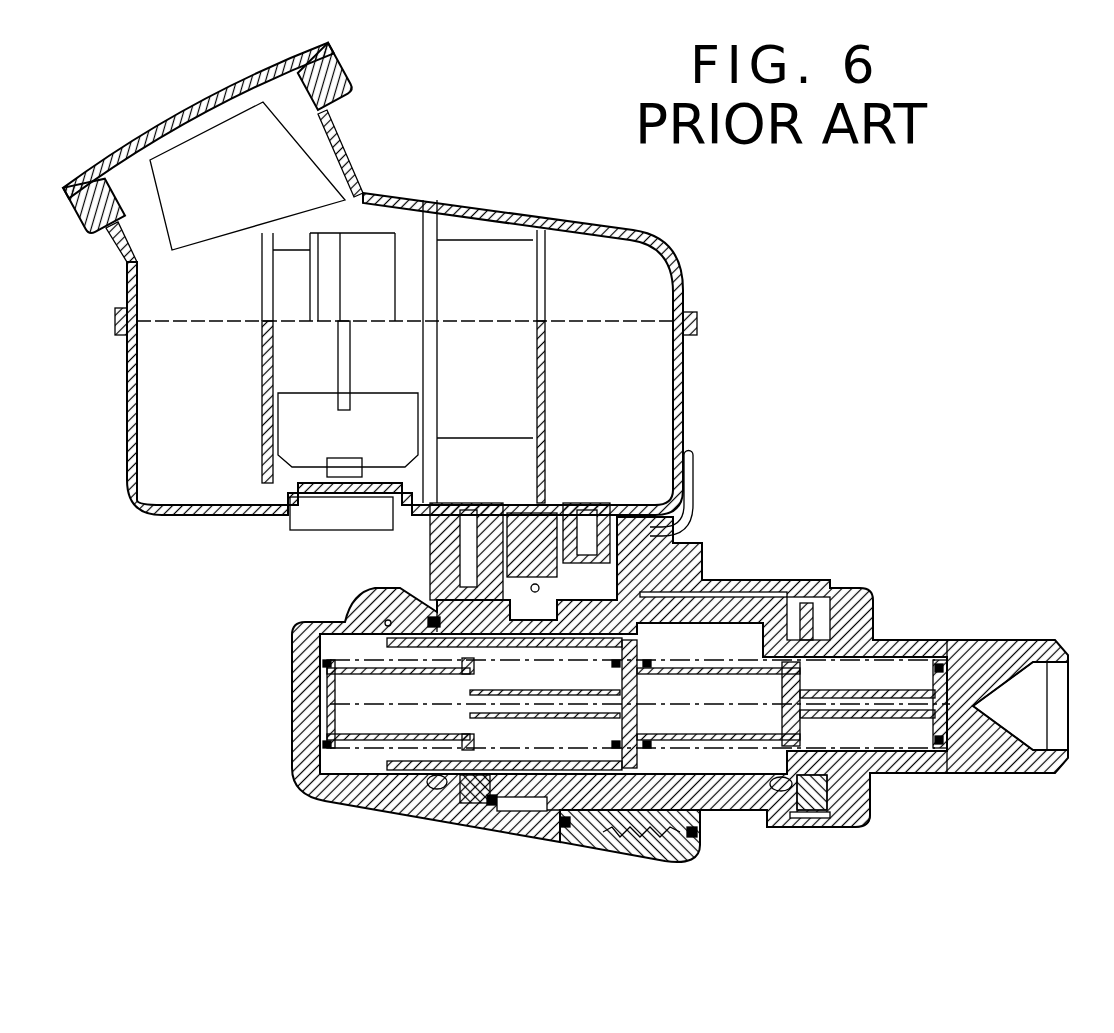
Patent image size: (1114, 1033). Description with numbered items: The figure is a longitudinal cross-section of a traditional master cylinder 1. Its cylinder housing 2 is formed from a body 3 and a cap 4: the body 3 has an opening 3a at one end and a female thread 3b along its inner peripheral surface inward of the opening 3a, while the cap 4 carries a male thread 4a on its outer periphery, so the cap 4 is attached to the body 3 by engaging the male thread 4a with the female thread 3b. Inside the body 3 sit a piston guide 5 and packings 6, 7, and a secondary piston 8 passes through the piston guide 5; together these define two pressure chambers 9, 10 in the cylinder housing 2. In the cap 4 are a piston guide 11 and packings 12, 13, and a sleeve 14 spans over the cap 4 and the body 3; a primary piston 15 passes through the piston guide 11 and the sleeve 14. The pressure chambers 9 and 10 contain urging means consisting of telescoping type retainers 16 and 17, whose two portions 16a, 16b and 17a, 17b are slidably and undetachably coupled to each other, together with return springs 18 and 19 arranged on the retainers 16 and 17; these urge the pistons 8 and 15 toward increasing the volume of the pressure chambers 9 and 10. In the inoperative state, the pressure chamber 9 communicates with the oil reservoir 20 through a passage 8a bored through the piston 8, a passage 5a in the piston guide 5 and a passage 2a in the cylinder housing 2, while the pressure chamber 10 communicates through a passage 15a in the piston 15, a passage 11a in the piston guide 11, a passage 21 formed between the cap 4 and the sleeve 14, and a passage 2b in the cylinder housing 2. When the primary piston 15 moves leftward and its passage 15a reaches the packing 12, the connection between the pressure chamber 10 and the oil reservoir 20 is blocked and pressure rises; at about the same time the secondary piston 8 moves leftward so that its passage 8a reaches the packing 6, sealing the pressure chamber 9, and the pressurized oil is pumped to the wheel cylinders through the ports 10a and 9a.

The master cylinder 1 is at (563, 470).
The cylinder housing 2 is at (680, 658).
The passage 2a is at (420, 592).
The passage 2b is at (620, 525).
The body 3 is at (665, 682).
The opening 3a is at (712, 580).
The female thread 3b is at (633, 830).
The cap 4 is at (793, 827).
The male thread 4a is at (660, 857).
The piston guide 5 is at (467, 800).
The passage 5a is at (448, 605).
The packing 6 is at (437, 787).
The packing 7 is at (492, 803).
The secondary piston 8 is at (532, 770).
The passage 8a is at (432, 618).
The pressure chamber 9 is at (330, 643).
The port 9a is at (385, 620).
The pressure chamber 10 is at (740, 668).
The port 10a is at (532, 583).
The piston guide 11 is at (813, 827).
The passage 11a is at (835, 595).
The packing 12 is at (777, 827).
The packing 13 is at (847, 825).
The sleeve 14 is at (717, 793).
The primary piston 15 is at (1005, 653).
The passage 15a is at (780, 608).
The telescoping type retainer 16 is at (439, 769).
The retainer portion 16a is at (578, 720).
The retainer portion 16b is at (330, 714).
The telescoping type retainer 17 is at (873, 671).
The retainer portion 17a is at (907, 692).
The retainer portion 17b is at (752, 665).
The return spring 18 is at (315, 649).
The return spring 19 is at (930, 753).
The oil reservoir 20 is at (411, 313).
The passage 21 is at (672, 540).